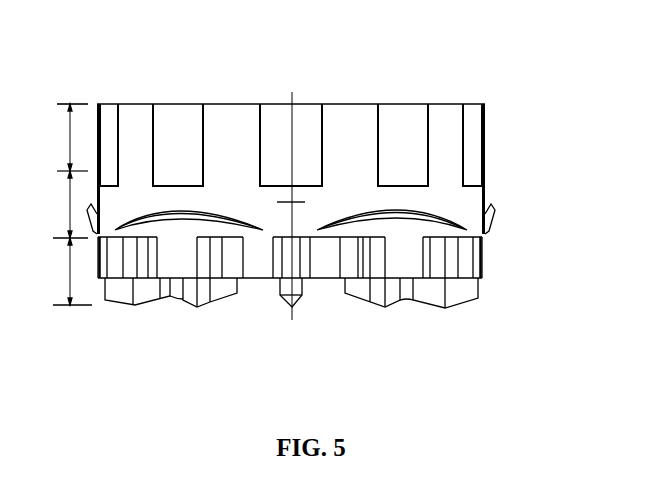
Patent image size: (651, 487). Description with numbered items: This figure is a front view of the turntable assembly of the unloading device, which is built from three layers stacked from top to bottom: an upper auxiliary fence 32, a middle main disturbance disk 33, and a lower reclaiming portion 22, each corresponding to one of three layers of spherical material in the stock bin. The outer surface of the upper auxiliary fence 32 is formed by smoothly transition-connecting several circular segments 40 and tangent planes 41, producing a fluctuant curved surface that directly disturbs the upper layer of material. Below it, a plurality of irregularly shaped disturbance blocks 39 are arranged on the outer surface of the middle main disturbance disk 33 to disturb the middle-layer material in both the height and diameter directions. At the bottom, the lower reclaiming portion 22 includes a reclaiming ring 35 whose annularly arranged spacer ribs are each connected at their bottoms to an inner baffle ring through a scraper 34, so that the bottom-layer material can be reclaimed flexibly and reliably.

The circular segment 40 is at (403, 128).
The tangent plane 41 is at (342, 128).
The disturbance block 39 is at (437, 207).
The reclaiming ring 35 is at (458, 262).
The scraper 34 is at (458, 297).
The upper auxiliary fence 32 is at (72, 137).
The middle main disturbance disk 33 is at (70, 204).
The lower reclaiming portion 22 is at (72, 271).